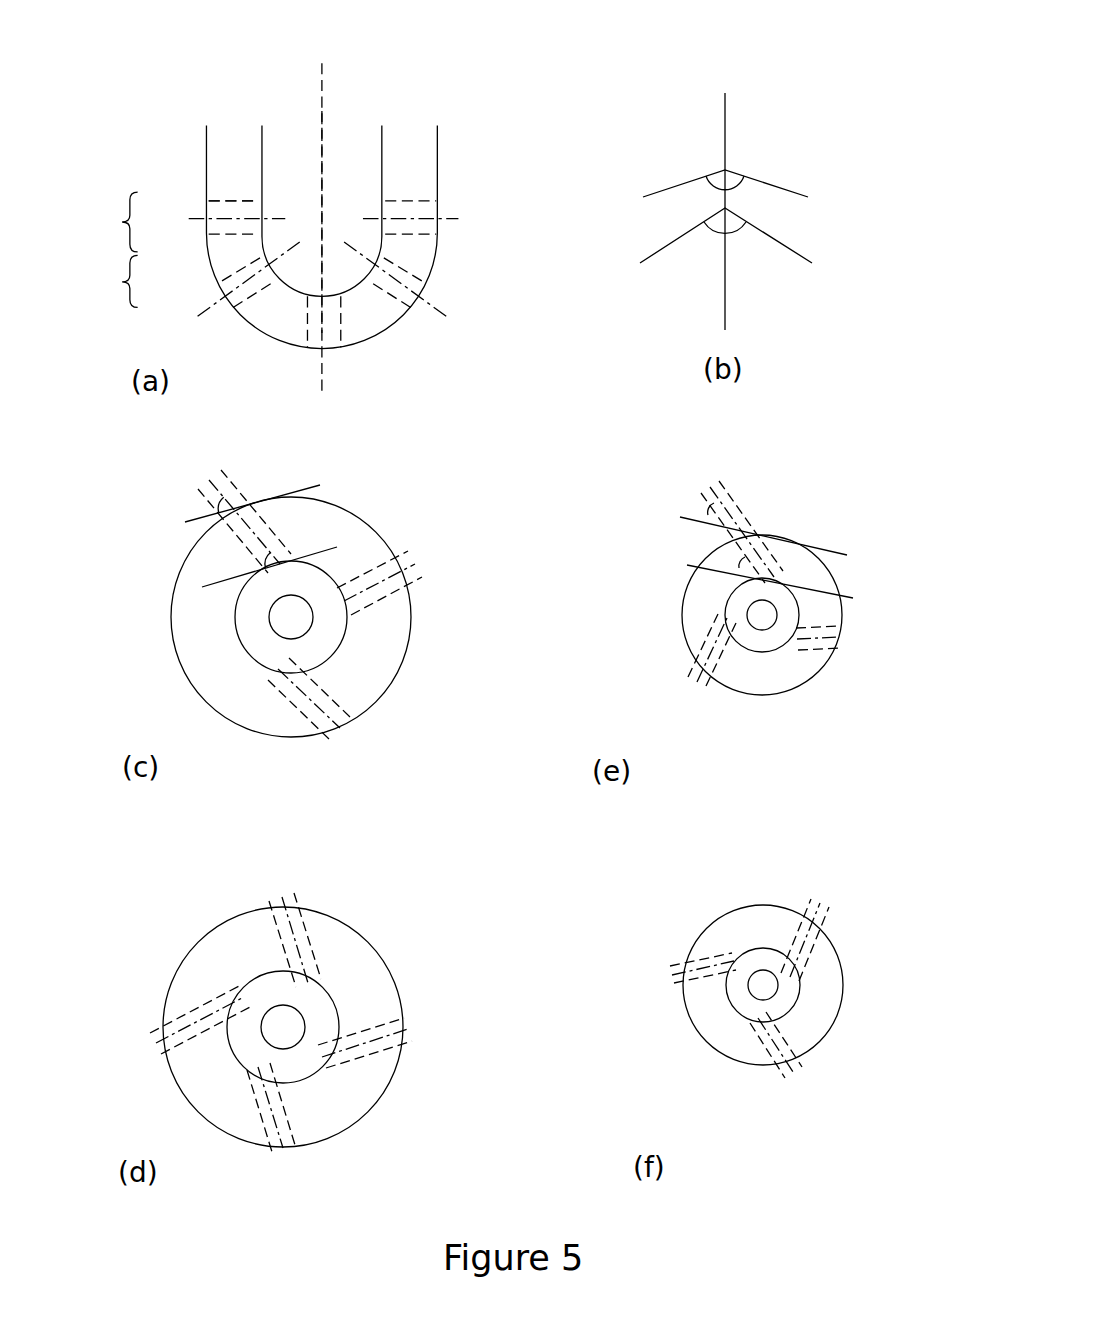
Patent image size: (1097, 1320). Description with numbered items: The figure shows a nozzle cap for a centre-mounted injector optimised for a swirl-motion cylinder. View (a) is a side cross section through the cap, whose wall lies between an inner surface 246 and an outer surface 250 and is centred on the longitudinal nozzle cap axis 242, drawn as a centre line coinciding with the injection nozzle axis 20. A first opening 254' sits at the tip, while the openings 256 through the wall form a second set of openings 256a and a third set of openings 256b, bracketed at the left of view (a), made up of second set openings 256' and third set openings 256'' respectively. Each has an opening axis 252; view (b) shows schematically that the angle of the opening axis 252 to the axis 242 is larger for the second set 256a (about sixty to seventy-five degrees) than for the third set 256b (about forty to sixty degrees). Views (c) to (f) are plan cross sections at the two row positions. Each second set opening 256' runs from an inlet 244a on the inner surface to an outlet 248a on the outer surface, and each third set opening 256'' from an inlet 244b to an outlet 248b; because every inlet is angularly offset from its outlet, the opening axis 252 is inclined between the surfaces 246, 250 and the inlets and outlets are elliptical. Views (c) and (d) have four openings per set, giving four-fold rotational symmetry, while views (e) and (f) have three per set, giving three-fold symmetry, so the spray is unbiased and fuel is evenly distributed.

The heat exchanger 20 is at (255, 199).
The longitudinal nozzle cap axis 242 is at (290, 97).
The inner surface 246 is at (340, 182).
The outer surface 250 is at (395, 135).
The openings 256 is at (173, 100).
The second set openings 256' is at (504, 417).
The third set openings 256'' is at (489, 703).
The second set of openings 256a is at (912, 168).
The third set of openings 256b is at (640, 940).
The opening axis 252 is at (178, 198).
The first opening 254' is at (505, 766).
The outlet 248a is at (177, 663).
The inlet 244a is at (237, 627).
The outlet 248b is at (285, 903).
The inlet 244b is at (333, 1005).